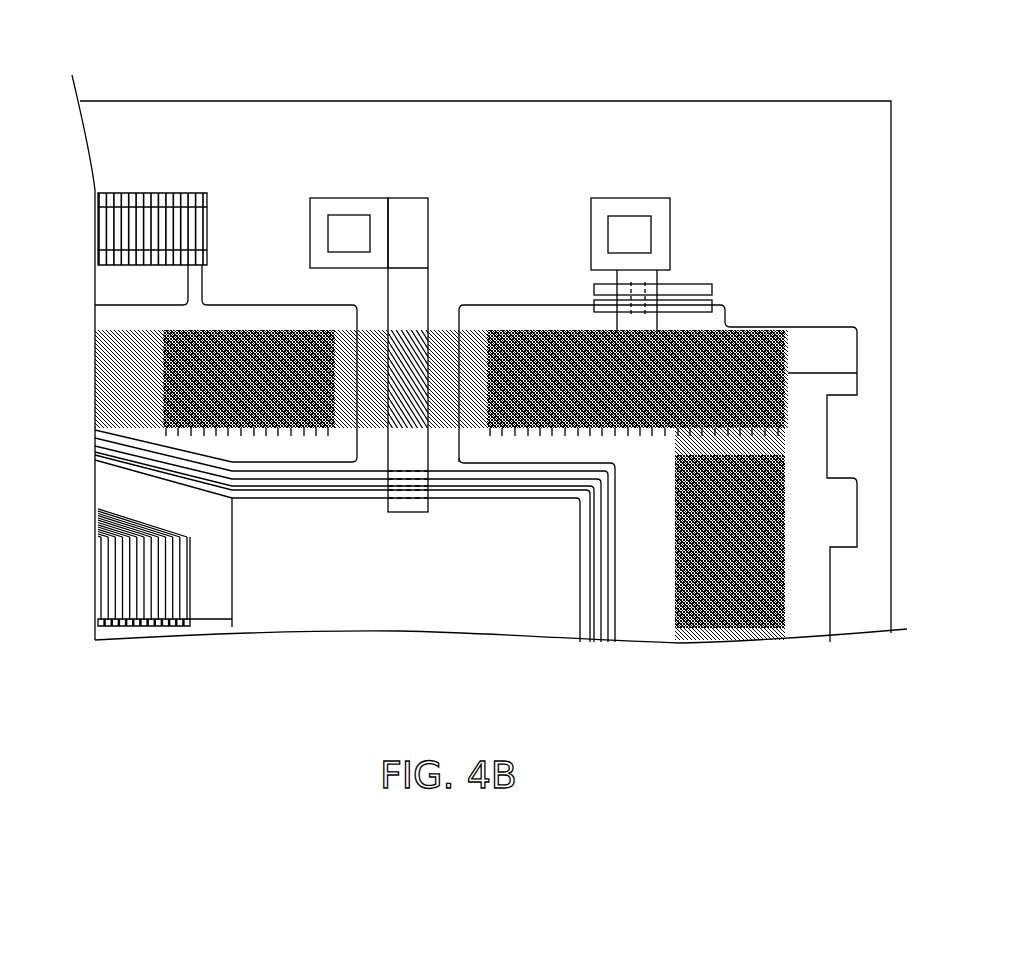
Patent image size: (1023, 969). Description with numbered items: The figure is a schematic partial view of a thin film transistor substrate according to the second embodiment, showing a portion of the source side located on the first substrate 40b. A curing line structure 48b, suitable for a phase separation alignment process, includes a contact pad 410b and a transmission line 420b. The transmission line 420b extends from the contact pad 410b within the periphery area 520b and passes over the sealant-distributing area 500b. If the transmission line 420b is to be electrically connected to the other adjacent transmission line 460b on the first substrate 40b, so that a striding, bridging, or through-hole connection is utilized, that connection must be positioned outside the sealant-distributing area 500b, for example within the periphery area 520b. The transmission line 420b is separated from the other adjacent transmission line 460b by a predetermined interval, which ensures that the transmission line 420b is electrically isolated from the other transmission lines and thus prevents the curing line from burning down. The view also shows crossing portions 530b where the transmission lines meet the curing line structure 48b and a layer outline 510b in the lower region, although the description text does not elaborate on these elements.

The sealant-distributing area 500b is at (240, 383).
The contact pad 410b is at (350, 238).
The curing line structure 48b is at (406, 198).
The transmission line 420b is at (412, 269).
The periphery area 520b is at (727, 197).
The other adjacent transmission line 460b is at (283, 472).
The crossing dashed line portions 530b is at (412, 487).
The layer outline 510b is at (643, 508).
The first substrate 40b is at (210, 629).